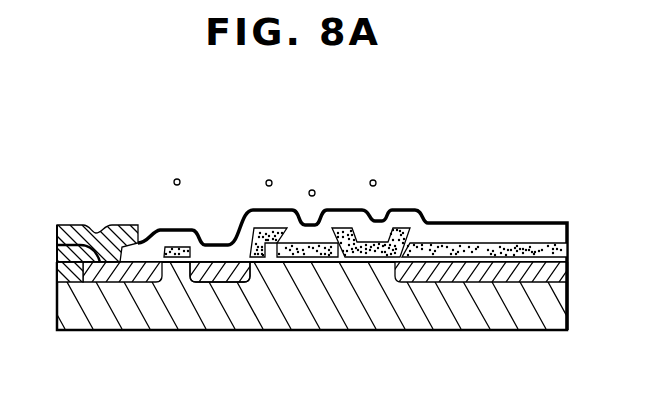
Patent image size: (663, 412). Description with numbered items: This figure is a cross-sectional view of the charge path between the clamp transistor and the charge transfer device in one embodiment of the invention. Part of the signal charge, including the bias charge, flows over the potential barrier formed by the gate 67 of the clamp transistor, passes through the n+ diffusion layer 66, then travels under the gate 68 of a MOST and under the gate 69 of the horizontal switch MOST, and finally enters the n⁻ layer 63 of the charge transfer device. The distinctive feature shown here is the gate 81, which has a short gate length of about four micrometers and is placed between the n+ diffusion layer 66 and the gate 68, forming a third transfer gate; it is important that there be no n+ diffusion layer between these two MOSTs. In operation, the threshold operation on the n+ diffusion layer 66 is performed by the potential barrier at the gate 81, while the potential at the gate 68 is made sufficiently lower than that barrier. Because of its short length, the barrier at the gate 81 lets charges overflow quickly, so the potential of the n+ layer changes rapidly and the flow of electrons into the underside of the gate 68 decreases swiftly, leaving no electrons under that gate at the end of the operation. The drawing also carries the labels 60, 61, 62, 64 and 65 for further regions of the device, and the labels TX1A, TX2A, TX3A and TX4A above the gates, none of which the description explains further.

The passivation layer 60 is at (548, 231).
The transparent electrode layer 61 is at (488, 247).
The substrate 62 is at (447, 318).
The n⁻ layer 63 is at (553, 272).
The lower electrode layer 64 is at (82, 272).
The electrode 65 is at (78, 225).
The n+ diffusion layer 66 is at (220, 283).
The gate of the clamp transistor 67 is at (186, 247).
The gate of the MOST 68 is at (295, 243).
The gate of the horizontal switch MOST 69 is at (406, 229).
The gate of short gate length 81 is at (265, 232).
The terminal TX1A is at (373, 242).
The terminal TX2A is at (312, 245).
The terminal TX3A is at (177, 250).
The terminal TX4A is at (269, 236).